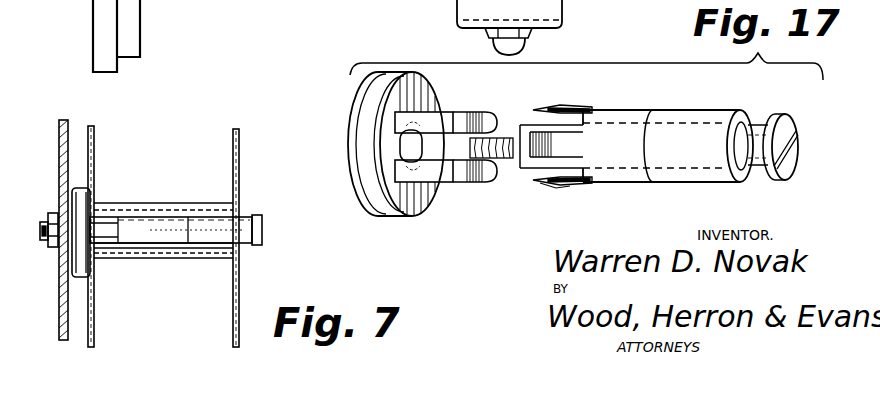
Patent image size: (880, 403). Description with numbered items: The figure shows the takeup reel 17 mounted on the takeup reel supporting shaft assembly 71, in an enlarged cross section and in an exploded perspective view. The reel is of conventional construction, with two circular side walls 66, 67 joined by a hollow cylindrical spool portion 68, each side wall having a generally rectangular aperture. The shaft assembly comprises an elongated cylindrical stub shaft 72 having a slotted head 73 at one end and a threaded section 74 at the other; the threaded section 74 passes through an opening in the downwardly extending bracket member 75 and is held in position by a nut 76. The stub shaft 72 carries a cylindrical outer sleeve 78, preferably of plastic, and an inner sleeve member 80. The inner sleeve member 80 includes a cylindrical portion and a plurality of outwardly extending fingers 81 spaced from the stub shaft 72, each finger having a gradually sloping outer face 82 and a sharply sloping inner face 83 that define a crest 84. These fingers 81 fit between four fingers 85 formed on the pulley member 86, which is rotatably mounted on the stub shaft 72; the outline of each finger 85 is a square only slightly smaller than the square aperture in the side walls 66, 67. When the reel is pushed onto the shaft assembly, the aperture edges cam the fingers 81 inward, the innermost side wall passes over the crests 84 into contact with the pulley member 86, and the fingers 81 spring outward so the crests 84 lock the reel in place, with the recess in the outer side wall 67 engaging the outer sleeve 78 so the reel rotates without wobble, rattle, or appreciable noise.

In FIG. 7, the takeup reel 17 is at (249, 125).
In FIG. 7, the side wall 66 is at (95, 143).
In FIG. 7, the side wall 67 is at (240, 152).
In FIG. 7, the spool portion 68 is at (176, 206).
In FIG. 7, the takeup reel supporting shaft assembly 71 is at (274, 228).
In FIG. 17, the takeup reel supporting shaft assembly 71 is at (789, 100).
In FIG. 7, the stub shaft 72 is at (247, 212).
In FIG. 17, the stub shaft 72 is at (522, 173).
In FIG. 7, the slotted head 73 is at (263, 242).
In FIG. 17, the slotted head 73 is at (795, 153).
In FIG. 7, the threaded section 74 is at (43, 240).
In FIG. 17, the threaded section 74 is at (508, 137).
In FIG. 7, the bracket member 75 is at (63, 118).
In FIG. 7, the nut 76 is at (53, 212).
In FIG. 7, the outer sleeve 78 is at (218, 245).
In FIG. 17, the outer sleeve 78 is at (702, 177).
In FIG. 7, the inner sleeve member 80 is at (158, 233).
In FIG. 17, the inner sleeve member 80 is at (625, 178).
In FIG. 17, the fingers 81 is at (569, 101).
In FIG. 17, the outer face 82 is at (558, 183).
In FIG. 17, the inner face 83 is at (540, 183).
In FIG. 17, the crests 84 is at (553, 187).
In FIG. 17, the fingers 85 is at (487, 183).
In FIG. 7, the pulley member 86 is at (82, 272).
In FIG. 17, the pulley member 86 is at (412, 207).